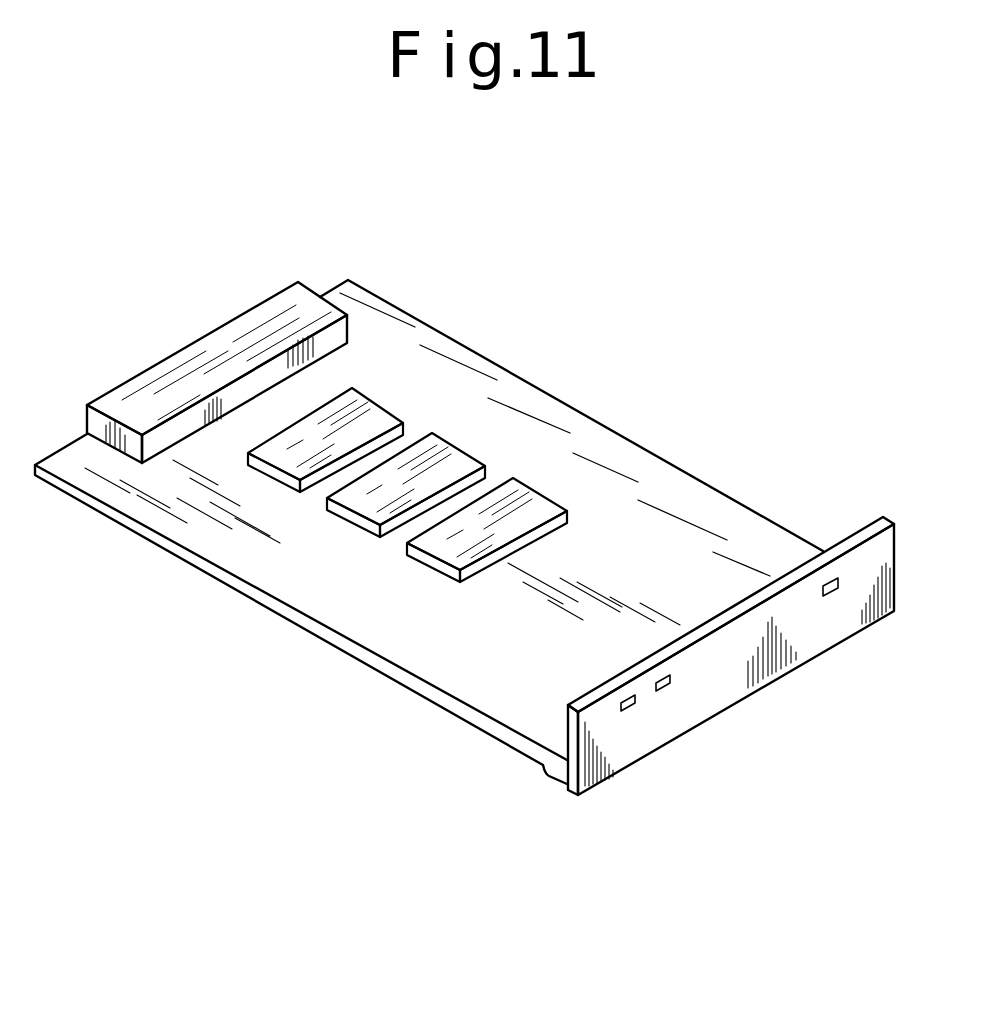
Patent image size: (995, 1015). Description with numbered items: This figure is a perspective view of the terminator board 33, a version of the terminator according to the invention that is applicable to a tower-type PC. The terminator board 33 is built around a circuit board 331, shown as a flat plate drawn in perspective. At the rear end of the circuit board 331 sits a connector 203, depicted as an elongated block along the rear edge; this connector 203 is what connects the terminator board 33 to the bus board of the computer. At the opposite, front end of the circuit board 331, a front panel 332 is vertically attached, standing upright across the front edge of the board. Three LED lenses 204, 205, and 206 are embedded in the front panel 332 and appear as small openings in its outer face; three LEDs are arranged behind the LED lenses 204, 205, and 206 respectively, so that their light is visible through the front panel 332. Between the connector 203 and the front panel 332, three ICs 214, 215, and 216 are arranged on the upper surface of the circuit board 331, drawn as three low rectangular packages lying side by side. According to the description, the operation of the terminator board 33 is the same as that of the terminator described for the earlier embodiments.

The terminator board 33 is at (464, 566).
The circuit board 331 is at (566, 406).
The front panel 332 is at (732, 698).
The connector 203 is at (190, 348).
The LED lens 204 is at (833, 594).
The LED lens 205 is at (668, 690).
The LED lens 206 is at (630, 710).
The IC 214 is at (280, 475).
The IC 215 is at (355, 520).
The IC 216 is at (438, 568).